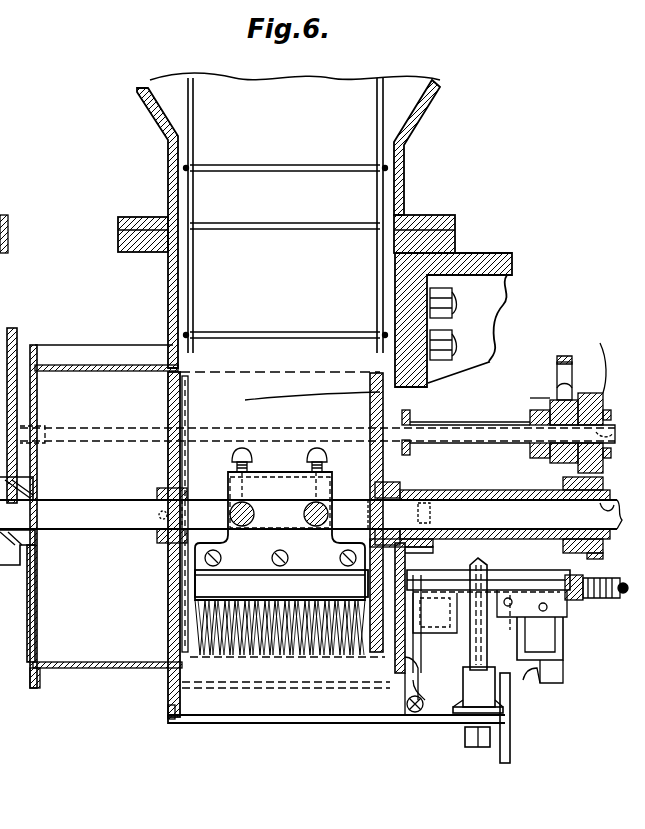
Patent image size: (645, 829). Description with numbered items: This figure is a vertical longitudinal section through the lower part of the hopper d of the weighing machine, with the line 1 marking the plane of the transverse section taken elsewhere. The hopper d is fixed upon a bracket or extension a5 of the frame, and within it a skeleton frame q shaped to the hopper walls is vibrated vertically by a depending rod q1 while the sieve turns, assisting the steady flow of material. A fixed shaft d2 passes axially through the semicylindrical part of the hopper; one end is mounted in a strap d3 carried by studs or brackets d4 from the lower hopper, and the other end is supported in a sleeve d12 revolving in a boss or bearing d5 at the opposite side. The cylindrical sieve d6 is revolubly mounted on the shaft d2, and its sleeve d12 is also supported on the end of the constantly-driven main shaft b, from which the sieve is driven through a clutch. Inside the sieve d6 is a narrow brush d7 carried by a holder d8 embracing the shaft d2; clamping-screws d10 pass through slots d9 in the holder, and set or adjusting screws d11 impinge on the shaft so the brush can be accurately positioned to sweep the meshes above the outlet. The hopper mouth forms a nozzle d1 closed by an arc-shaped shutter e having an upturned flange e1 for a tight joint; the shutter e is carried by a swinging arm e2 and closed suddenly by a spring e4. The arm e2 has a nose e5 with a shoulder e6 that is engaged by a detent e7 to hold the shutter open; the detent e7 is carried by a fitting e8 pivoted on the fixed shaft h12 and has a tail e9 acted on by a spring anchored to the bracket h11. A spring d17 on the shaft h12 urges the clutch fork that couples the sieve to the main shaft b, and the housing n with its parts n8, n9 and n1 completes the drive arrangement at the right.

The section line 1 is at (173, 78).
The hopper d is at (167, 178).
The skeleton frame q is at (190, 196).
The bracket or extension a5 is at (498, 295).
The shaft n1 is at (500, 430).
The gear n8 is at (588, 393).
The gear n9 is at (593, 356).
The depending rod q1 is at (564, 356).
The studs or brackets d4 is at (50, 352).
The housing n is at (30, 618).
The strap d3 is at (8, 328).
The cylindrical sieve d6 is at (295, 372).
The fixed shaft d2 is at (65, 515).
The holder d8 is at (368, 488).
The boss or bearing d5 is at (435, 500).
The sleeve d12 is at (442, 509).
The main shaft b is at (516, 520).
The slots d9 is at (315, 530).
The set or adjusting screws d11 is at (307, 458).
The clamping-screws d10 is at (304, 510).
The brush d7 is at (200, 628).
The arc-shaped shutter e is at (296, 724).
The upturned edge or flange e1 is at (166, 714).
The nozzle d1 is at (185, 718).
The fixed shaft h12 is at (435, 580).
The fitting e8 is at (445, 613).
The spring d17 is at (603, 600).
The bracket or fitting h11 is at (563, 650).
The tail e9 is at (542, 666).
The detent e7 is at (500, 690).
The projection or shoulder e6 is at (503, 709).
The swinging arm e2 is at (495, 726).
The nose e5 is at (512, 752).
The spring e4 is at (425, 714).